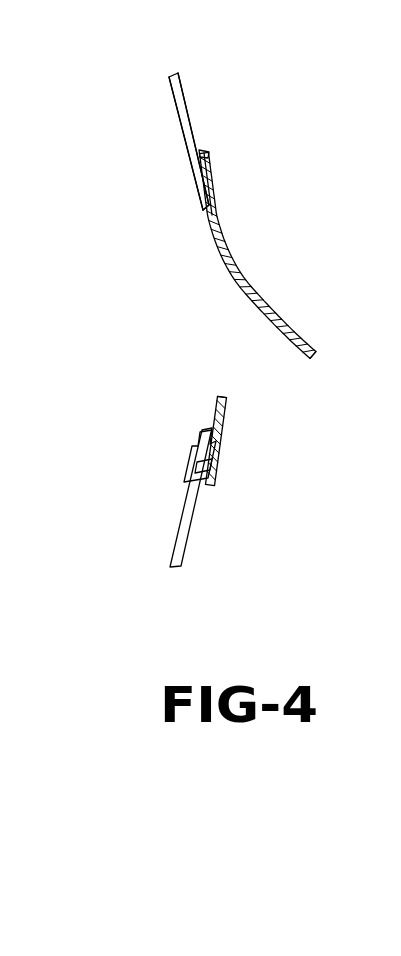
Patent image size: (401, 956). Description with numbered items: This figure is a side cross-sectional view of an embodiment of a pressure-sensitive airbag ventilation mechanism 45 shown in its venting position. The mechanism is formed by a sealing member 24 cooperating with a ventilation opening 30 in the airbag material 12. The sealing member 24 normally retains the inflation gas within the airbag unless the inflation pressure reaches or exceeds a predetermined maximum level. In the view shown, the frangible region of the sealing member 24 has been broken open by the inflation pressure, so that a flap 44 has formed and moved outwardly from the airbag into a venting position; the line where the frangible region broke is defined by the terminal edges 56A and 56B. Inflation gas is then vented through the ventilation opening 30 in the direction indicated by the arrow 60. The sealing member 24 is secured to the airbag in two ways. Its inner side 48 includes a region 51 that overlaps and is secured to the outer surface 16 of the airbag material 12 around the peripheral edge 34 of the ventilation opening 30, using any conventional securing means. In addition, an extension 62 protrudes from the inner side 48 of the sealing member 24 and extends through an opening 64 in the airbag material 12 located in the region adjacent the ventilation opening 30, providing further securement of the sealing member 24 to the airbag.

The airbag material 12 is at (180, 102).
The outer surface 16 is at (197, 141).
The sealing member 24 is at (208, 157).
The region of the sealing member 51 is at (213, 193).
The peripheral edge 34 is at (203, 209).
The ventilation opening 30 is at (222, 322).
The flap 44 is at (250, 293).
The terminal edge 56A is at (318, 356).
The arrow 60 is at (200, 362).
The inner side 48 is at (215, 418).
The terminal edge 56B is at (225, 398).
The extension 62 is at (192, 452).
The opening 64 is at (210, 465).
The pressure-sensitive airbag ventilation mechanism 45 is at (145, 165).